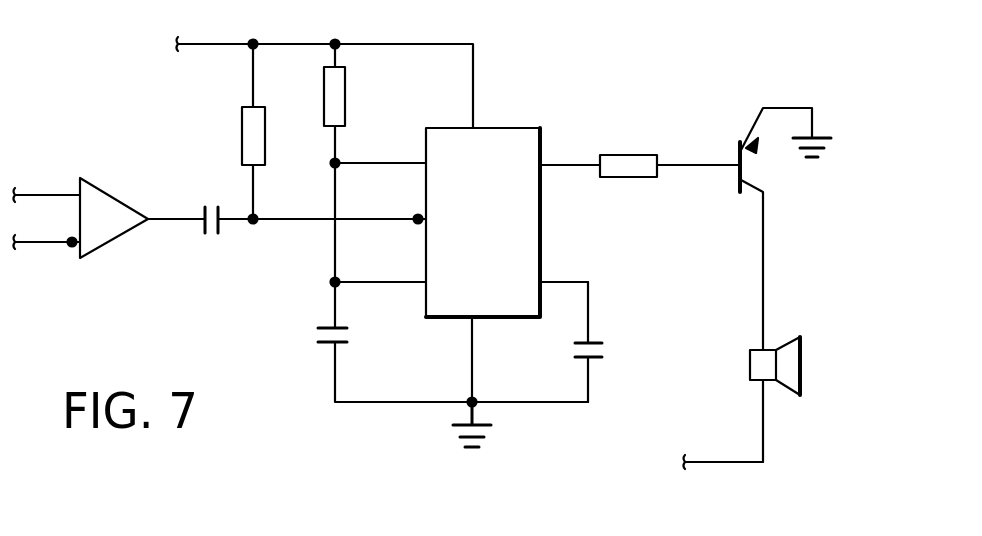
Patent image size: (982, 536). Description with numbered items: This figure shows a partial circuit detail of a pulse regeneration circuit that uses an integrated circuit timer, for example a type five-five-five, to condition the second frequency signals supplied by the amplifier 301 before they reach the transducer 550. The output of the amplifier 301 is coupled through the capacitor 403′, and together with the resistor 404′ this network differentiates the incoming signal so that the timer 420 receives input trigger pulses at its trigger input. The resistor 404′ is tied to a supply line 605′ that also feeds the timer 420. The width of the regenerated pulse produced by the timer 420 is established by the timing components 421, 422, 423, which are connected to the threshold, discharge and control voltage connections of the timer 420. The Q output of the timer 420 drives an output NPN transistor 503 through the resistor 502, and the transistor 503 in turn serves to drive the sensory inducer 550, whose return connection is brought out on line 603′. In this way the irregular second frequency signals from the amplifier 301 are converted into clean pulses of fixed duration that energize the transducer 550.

The amplifier 301 is at (91, 230).
The capacitor 403′ is at (193, 212).
The resistor 404′ is at (251, 134).
The supply voltage line 605′ is at (172, 50).
The timing component 421 is at (341, 99).
The timer 420 is at (498, 168).
The timing component 422 is at (312, 330).
The timing component 423 is at (608, 345).
The resistor 502 is at (625, 165).
The transistor 503 is at (730, 177).
The transducer 550 is at (758, 356).
The output line 603′ is at (672, 462).